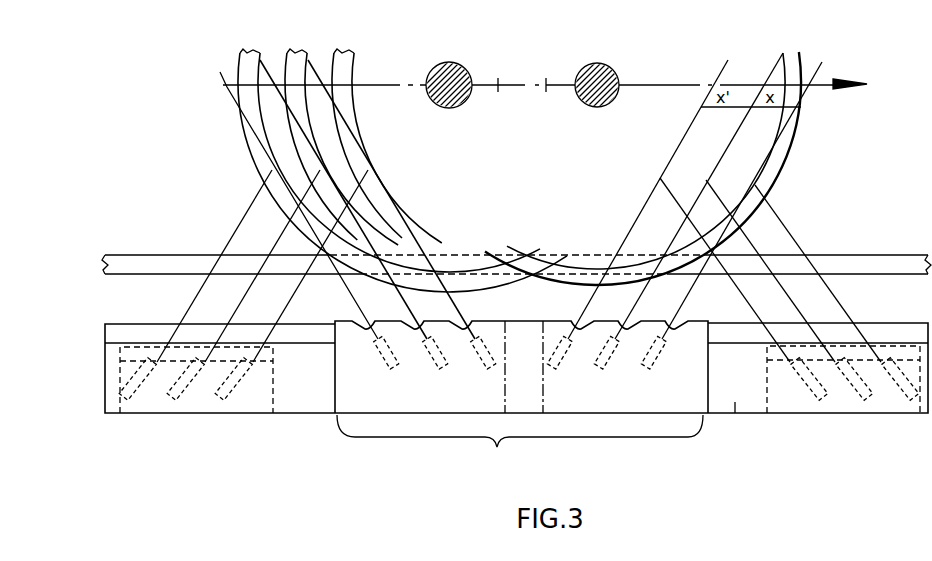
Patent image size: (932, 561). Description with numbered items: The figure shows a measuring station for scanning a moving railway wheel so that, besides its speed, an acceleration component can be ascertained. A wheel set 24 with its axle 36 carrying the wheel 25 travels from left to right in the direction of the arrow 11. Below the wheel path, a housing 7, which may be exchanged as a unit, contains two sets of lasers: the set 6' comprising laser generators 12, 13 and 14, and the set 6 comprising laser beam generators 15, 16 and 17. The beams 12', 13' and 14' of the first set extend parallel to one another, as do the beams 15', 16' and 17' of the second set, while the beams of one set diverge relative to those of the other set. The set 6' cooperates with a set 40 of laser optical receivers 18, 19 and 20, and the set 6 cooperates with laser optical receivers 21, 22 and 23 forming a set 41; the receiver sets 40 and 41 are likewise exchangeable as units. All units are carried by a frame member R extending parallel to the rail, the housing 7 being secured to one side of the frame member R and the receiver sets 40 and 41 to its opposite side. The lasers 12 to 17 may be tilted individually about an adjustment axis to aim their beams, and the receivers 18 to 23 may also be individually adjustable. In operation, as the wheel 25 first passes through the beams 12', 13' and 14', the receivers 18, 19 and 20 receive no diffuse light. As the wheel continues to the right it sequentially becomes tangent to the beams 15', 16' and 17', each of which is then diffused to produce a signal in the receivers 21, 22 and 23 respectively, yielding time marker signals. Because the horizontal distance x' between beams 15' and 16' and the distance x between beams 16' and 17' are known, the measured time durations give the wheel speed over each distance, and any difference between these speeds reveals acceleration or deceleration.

The set of laser beam generators 6 is at (606, 433).
The set of laser generators 6' is at (404, 432).
The housing 7 is at (521, 399).
The arrow 11 is at (835, 75).
The laser generator 12 is at (373, 403).
The laser generator 13 is at (416, 403).
The laser generator 14 is at (464, 403).
The laser beam generator 15 is at (538, 403).
The laser beam generator 16 is at (590, 403).
The laser beam generator 17 is at (640, 403).
The laser beam 12' is at (268, 202).
The laser beam 13' is at (343, 182).
The laser beam 14' is at (391, 182).
The laser beam 15' is at (648, 199).
The laser beam 16' is at (646, 181).
The laser beam 17' is at (657, 181).
The laser optical receiver 18 is at (137, 402).
The laser optical receiver 19 is at (170, 402).
The laser optical receiver 20 is at (223, 402).
The laser optical receiver 21 is at (808, 398).
The laser optical receiver 22 is at (847, 385).
The laser optical receiver 23 is at (897, 390).
The wheel set 24 is at (462, 63).
The wheel 25 is at (267, 168).
The axle 36 is at (605, 73).
The set of laser optical receivers 40 is at (153, 410).
The set of laser optical receivers 41 is at (852, 410).
The frame member R is at (735, 402).